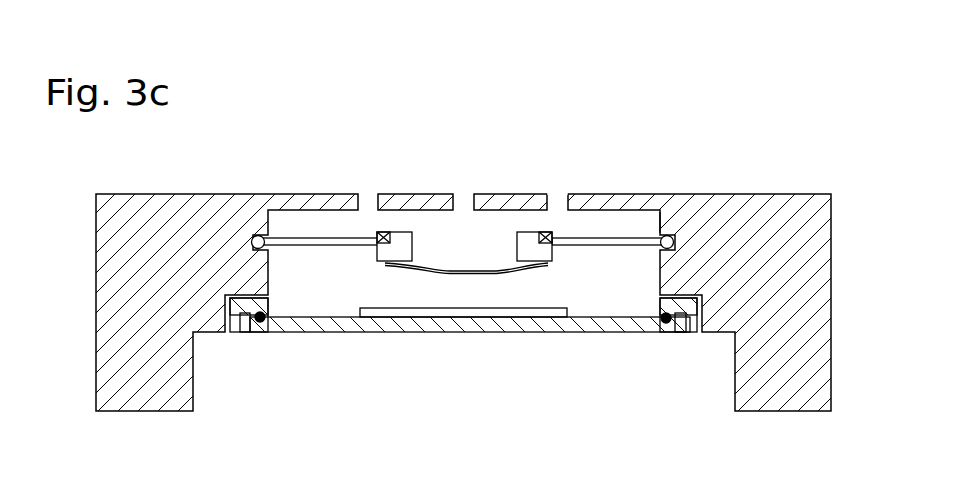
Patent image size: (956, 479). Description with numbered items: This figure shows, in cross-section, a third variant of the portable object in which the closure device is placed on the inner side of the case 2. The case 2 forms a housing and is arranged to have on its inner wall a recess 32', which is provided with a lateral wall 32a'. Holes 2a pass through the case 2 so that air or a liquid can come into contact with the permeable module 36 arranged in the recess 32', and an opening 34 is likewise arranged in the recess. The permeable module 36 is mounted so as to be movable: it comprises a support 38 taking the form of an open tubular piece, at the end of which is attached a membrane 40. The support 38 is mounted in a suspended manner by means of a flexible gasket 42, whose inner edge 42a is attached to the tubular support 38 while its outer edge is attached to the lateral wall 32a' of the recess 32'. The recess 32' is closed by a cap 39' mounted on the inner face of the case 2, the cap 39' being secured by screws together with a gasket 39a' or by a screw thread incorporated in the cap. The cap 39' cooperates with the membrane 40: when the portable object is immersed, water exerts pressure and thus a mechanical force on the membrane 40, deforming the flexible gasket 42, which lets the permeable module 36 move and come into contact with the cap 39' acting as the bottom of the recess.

The case 2 is at (768, 210).
The holes 2a is at (557, 195).
The recess 32' is at (470, 321).
The lateral wall 32a' is at (646, 188).
The opening 34 is at (228, 313).
The permeable module 36 is at (368, 259).
The support 38 is at (397, 243).
The cap 39' is at (470, 349).
The gasket 39a' is at (671, 340).
The membrane 40 is at (473, 274).
The flexible gasket 42 is at (295, 242).
The inner edge 42a is at (540, 233).